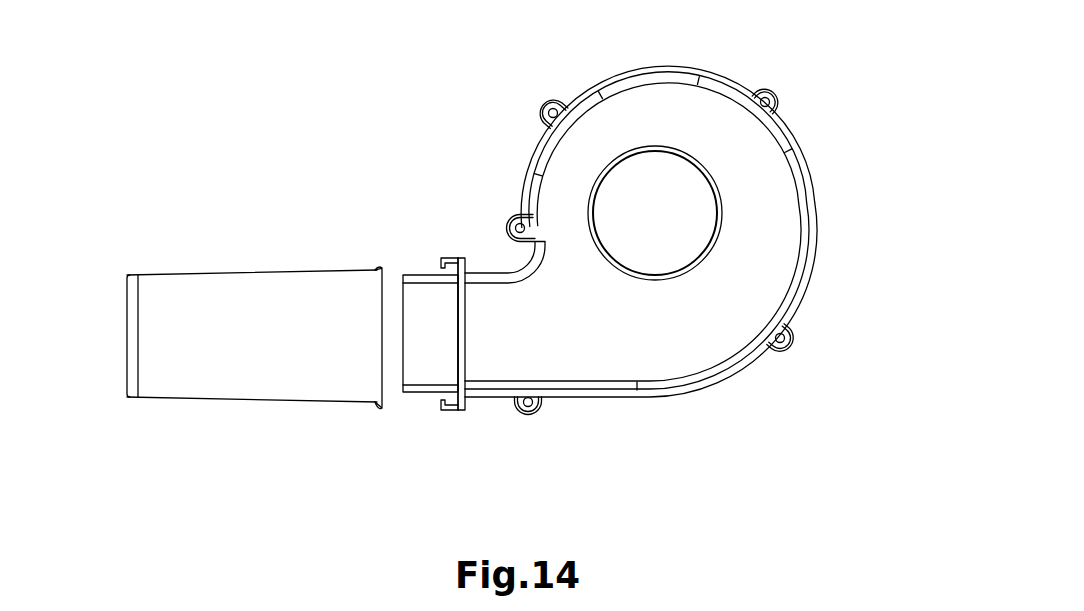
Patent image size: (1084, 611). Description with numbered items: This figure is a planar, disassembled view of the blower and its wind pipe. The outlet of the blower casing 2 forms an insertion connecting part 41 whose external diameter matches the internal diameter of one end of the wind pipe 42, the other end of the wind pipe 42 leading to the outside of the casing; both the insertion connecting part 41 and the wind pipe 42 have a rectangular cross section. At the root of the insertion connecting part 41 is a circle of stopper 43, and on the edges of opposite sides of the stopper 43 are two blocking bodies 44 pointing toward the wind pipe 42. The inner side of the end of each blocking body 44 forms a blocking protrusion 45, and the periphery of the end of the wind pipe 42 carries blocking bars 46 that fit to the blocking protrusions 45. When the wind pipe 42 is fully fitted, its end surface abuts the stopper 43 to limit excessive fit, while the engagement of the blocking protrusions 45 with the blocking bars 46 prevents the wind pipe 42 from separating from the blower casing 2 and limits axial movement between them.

The blower casing 2 is at (758, 262).
The insertion connecting part 41 is at (415, 362).
The wind pipe 42 is at (210, 292).
The stopper 43 is at (463, 340).
The blocking body 44 is at (460, 258).
The blocking protrusion 45 is at (442, 262).
The blocking bar 46 is at (378, 268).